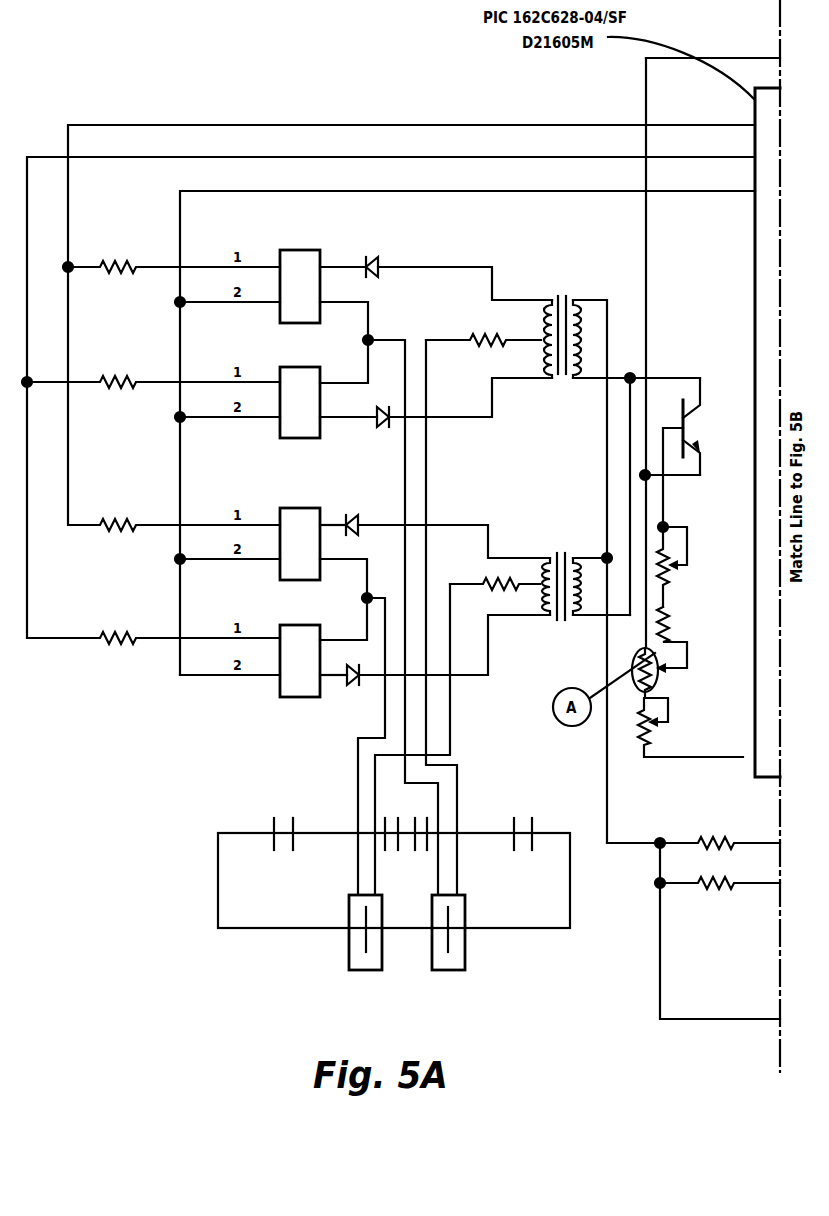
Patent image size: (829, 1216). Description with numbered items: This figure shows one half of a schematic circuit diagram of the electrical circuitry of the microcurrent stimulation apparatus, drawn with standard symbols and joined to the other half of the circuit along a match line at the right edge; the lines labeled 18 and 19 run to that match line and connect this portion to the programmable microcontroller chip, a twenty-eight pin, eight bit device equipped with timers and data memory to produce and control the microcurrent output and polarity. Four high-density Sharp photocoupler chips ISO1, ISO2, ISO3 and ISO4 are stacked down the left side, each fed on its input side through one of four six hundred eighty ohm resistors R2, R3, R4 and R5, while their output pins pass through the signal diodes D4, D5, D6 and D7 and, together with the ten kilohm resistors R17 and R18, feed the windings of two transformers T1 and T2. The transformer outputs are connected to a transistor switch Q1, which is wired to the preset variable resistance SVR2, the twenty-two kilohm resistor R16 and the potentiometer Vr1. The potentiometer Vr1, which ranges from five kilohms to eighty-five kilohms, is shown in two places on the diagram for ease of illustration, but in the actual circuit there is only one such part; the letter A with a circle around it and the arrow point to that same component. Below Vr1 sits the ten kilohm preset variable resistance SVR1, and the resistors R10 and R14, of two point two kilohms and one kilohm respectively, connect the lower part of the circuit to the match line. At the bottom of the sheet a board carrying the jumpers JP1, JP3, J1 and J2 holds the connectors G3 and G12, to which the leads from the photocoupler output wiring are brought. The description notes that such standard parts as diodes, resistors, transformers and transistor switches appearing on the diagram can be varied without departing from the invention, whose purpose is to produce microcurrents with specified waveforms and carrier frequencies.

The signal line 18 is at (391, 388).
The signal line 19 is at (411, 391).
The resistor R2 is at (174, 528).
The resistor R3 is at (171, 270).
The resistor R4 is at (153, 642).
The resistor R5 is at (151, 386).
The resistor R10 is at (693, 832).
The resistor R14 is at (717, 931).
The resistor R16 is at (680, 634).
The resistor R17 is at (457, 729).
The resistor R18 is at (483, 601).
The diode D4 is at (435, 526).
The diode D5 is at (435, 650).
The diode D6 is at (436, 268).
The diode D7 is at (436, 402).
The photocoupler chip ISO1 is at (308, 535).
The photocoupler chip ISO2 is at (308, 651).
The photocoupler chip ISO3 is at (308, 277).
The photocoupler chip ISO4 is at (308, 393).
The transformer T1 is at (586, 578).
The transformer T2 is at (622, 560).
The transistor Q1 is at (674, 443).
The preset variable resistance SVR1 is at (690, 727).
The preset variable resistance SVR2 is at (681, 556).
The potentiometer Vr1 is at (643, 675).
The jumper JP1 is at (521, 825).
The jumper JP3 is at (281, 825).
The jumper J1 is at (388, 846).
The jumper J2 is at (419, 825).
The connector G3 is at (336, 945).
The connector G12 is at (476, 945).